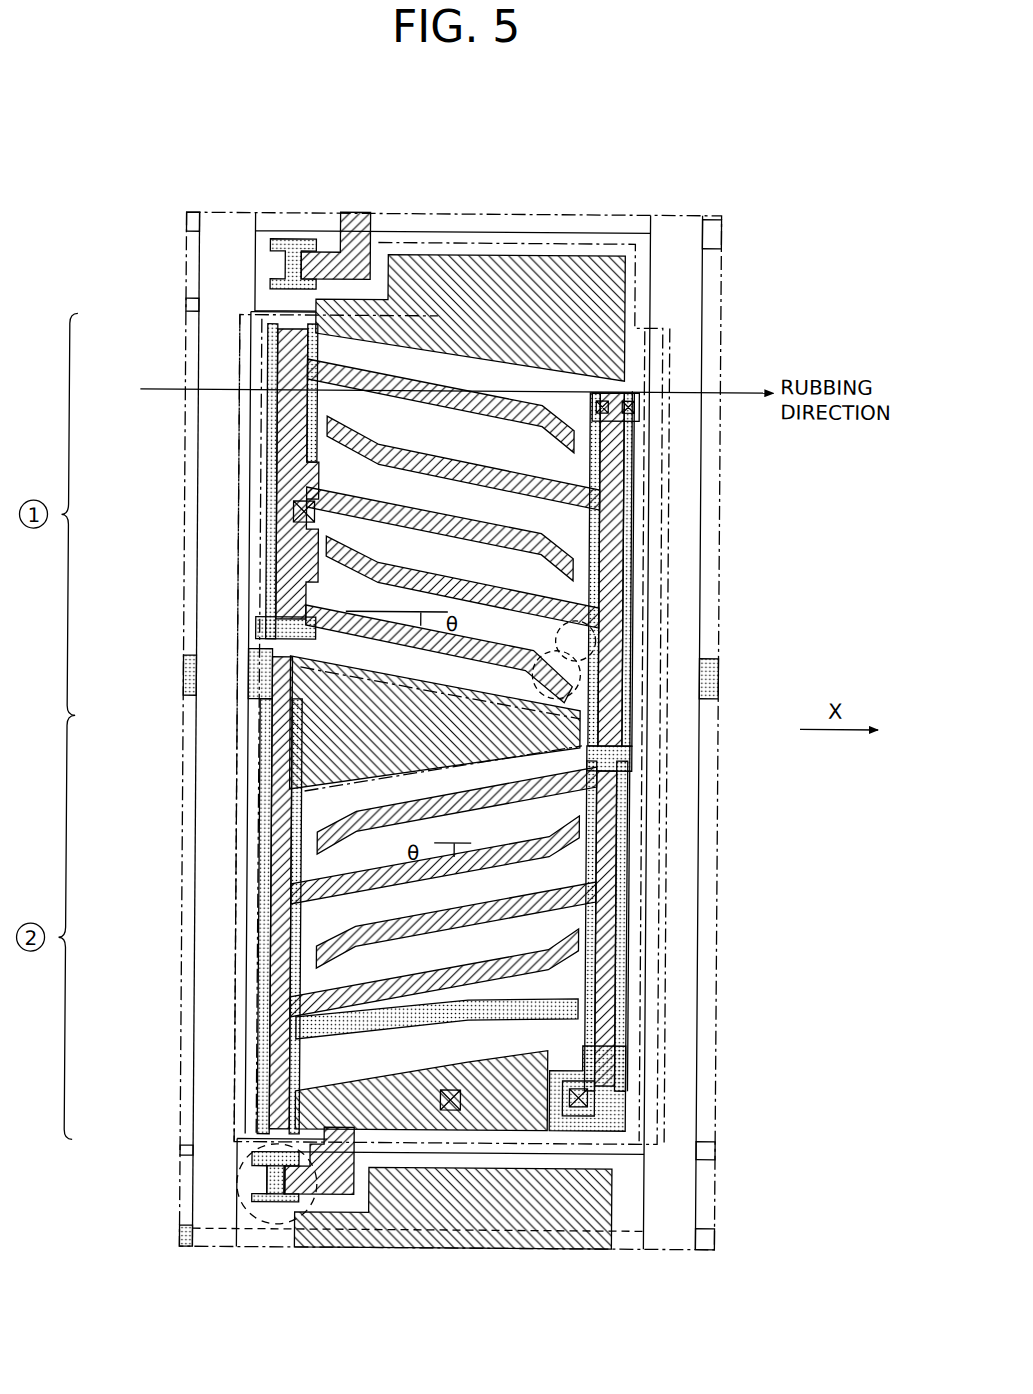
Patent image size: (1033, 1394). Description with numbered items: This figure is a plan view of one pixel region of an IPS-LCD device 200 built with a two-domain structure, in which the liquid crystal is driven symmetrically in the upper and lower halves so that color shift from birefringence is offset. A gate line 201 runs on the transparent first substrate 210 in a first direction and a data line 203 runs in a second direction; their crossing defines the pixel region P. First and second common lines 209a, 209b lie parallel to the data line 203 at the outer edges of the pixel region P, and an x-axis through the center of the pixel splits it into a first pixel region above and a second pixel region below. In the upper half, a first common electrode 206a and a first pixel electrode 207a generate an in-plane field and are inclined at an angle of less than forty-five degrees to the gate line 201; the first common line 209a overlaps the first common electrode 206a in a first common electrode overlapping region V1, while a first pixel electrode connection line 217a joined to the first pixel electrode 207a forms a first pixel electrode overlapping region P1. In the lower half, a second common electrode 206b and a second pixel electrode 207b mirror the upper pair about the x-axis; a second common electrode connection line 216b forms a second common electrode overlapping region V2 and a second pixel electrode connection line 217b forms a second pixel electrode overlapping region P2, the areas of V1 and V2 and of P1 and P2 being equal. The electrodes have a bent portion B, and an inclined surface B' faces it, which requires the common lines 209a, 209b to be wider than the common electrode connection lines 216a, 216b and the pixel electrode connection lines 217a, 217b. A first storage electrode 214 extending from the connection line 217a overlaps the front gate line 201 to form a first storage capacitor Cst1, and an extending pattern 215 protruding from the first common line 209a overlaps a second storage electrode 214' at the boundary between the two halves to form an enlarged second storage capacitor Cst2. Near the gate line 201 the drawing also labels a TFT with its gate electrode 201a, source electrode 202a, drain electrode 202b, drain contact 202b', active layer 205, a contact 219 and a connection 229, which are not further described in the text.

The IPS-LCD device 200 is at (146, 239).
The gate line 201 is at (710, 1197).
The gate electrode 201a is at (265, 1210).
The source electrode 202a is at (255, 1183).
The drain electrode 202b is at (326, 1224).
The drain electrode contact 202b' is at (681, 1089).
The data line 203 is at (200, 1100).
The active layer 205 is at (285, 1205).
The first common electrode 206a is at (305, 462).
The second common electrode 206b is at (300, 968).
The first pixel electrode 207a is at (300, 427).
The second pixel electrode 207b is at (300, 928).
The first common line 209a is at (265, 688).
The second common line 209b is at (630, 755).
The first substrate 210 is at (720, 232).
The first storage electrode 214 is at (559, 318).
The second storage electrode 214' is at (547, 759).
The extending pattern 215 is at (470, 745).
The first common electrode connection line 216a is at (300, 597).
The second common electrode connection line 216b is at (625, 910).
The first pixel electrode connection line 217a is at (610, 507).
The second pixel electrode connection line 217b is at (272, 825).
The contact hole 219 is at (292, 512).
The pixel electrode connection 229 is at (420, 1088).
The first storage capacitor Cst1 is at (558, 243).
The second storage capacitor Cst2 is at (265, 740).
The pixel region P is at (665, 462).
The first pixel electrode overlapping region P1 is at (640, 553).
The second pixel electrode overlapping region P2 is at (240, 872).
The first common electrode overlapping region V1 is at (240, 535).
The second common electrode overlapping region V2 is at (640, 968).
The bent portion B is at (651, 688).
The inclined surface B' is at (665, 626).
The thin film transistor TFT is at (233, 1191).